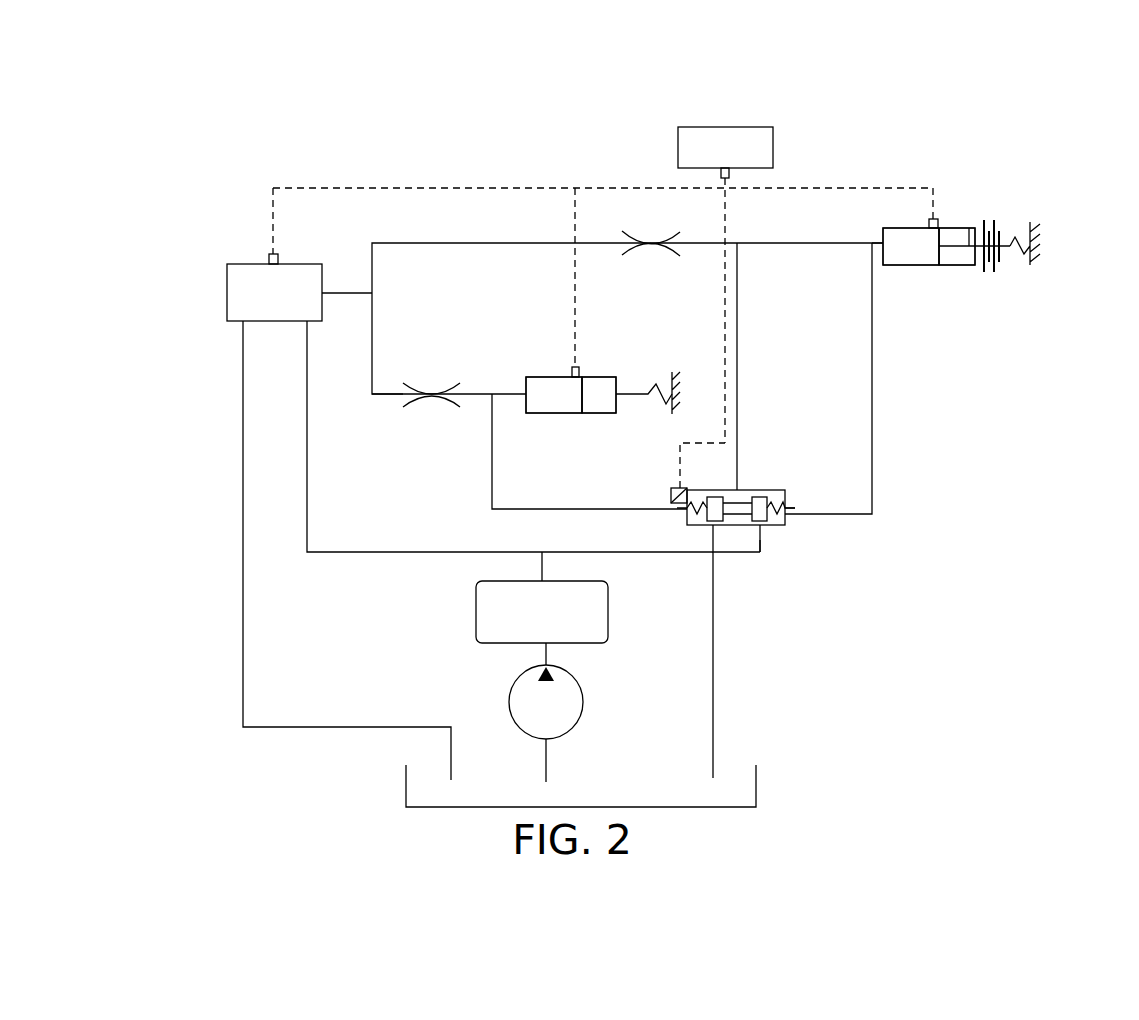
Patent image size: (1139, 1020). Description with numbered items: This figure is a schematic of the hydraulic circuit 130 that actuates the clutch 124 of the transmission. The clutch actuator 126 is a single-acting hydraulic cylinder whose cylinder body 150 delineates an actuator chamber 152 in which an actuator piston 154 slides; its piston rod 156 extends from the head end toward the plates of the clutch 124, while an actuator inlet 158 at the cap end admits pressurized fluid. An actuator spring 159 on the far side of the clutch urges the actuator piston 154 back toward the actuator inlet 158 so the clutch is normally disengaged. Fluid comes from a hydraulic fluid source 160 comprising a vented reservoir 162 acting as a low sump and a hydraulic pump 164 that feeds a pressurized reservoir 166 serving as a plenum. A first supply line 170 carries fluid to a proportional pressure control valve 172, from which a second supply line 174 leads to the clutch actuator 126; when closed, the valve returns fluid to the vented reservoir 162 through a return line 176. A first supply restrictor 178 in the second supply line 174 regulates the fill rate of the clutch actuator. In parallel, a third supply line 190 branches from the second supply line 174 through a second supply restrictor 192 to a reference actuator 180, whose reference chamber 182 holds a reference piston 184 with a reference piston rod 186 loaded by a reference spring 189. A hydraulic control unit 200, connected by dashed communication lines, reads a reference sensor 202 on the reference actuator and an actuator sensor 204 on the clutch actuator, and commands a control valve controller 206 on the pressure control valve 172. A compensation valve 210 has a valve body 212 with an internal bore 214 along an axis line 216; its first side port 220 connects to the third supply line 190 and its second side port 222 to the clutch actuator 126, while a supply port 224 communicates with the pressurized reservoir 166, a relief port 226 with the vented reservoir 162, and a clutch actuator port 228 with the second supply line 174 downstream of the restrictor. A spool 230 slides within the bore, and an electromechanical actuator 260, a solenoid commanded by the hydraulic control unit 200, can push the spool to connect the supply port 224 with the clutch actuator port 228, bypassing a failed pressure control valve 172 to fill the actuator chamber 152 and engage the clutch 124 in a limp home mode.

The clutch 124 is at (1000, 220).
The clutch actuator 126 is at (952, 216).
The hydraulic circuit 130 is at (832, 663).
The cylinder body 150 is at (912, 265).
The actuator chamber 152 is at (906, 228).
The actuator piston 154 is at (945, 253).
The piston rod 156 is at (968, 233).
The actuator inlet 158 is at (883, 242).
The actuator spring 159 is at (1024, 252).
The hydraulic fluid source 160 is at (742, 735).
The vented reservoir 162 is at (756, 786).
The hydraulic pump 164 is at (583, 700).
The pressurized reservoir 166 is at (476, 612).
The first supply line 170 is at (307, 470).
The pressure control valve 172 is at (242, 264).
The second supply line 174 is at (420, 243).
The return line 176 is at (243, 452).
The first supply restrictor 178 is at (651, 241).
The reference actuator 180 is at (540, 413).
The reference chamber 182 is at (541, 374).
The reference piston 184 is at (585, 388).
The reference piston rod 186 is at (647, 396).
The reference spring 189 is at (657, 384).
The third supply line 190 is at (383, 392).
The second supply restrictor 192 is at (445, 392).
The hydraulic control unit 200 is at (773, 150).
The reference sensor 202 is at (578, 366).
The actuator sensor 204 is at (936, 218).
The control valve controller 206 is at (278, 257).
The compensation valve 210 is at (771, 460).
The valve body 212 is at (777, 492).
The internal bore 214 is at (781, 540).
The axis line 216 is at (797, 500).
The first side port 220 is at (712, 523).
The second side port 222 is at (785, 513).
The supply port 224 is at (771, 525).
The relief port 226 is at (712, 540).
The clutch actuator port 228 is at (738, 488).
The spool 230 is at (716, 497).
The electromechanical actuator 260 is at (671, 495).